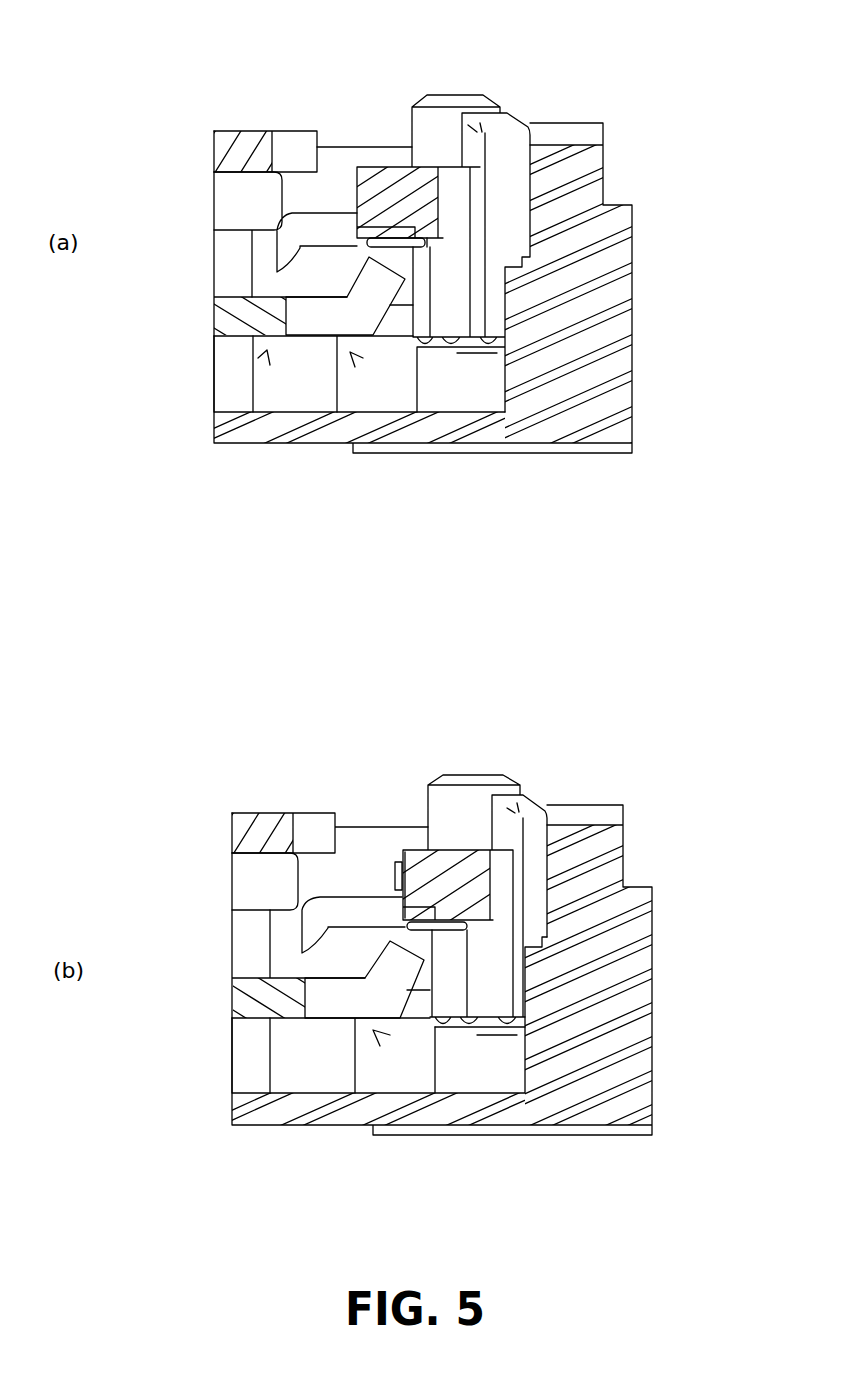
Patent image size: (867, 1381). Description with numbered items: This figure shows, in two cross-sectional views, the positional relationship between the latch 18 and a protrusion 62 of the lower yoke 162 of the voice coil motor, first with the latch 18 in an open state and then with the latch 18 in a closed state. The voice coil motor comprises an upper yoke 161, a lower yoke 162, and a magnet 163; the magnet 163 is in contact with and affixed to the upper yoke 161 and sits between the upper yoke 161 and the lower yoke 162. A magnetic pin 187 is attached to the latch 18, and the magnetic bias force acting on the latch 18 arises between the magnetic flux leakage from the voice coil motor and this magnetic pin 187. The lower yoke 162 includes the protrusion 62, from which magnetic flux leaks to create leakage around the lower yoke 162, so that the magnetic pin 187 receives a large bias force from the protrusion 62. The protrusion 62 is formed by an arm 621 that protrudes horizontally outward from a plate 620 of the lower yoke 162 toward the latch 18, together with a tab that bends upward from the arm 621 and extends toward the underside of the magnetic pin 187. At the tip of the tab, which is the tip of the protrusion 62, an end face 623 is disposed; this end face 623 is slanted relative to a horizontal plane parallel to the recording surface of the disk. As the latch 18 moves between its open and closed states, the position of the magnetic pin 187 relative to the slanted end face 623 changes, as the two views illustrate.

The latch 18 is at (412, 130).
The upper yoke 161 is at (283, 130).
The lower yoke 162 is at (267, 350).
The magnet 163 is at (283, 198).
The magnetic pin 187 is at (370, 247).
The protrusion 62 is at (350, 352).
The plate 620 is at (237, 338).
The arm 621 is at (310, 337).
The end face 623 is at (355, 248).